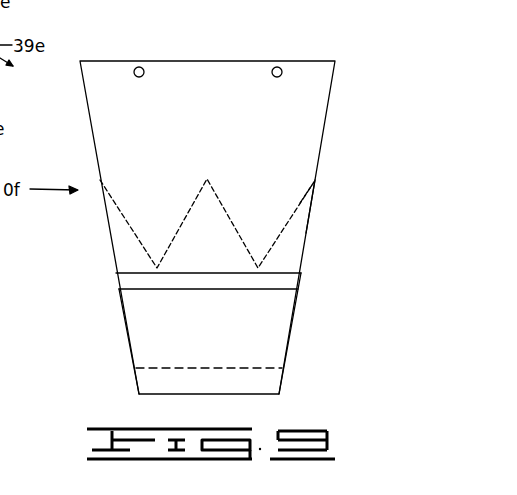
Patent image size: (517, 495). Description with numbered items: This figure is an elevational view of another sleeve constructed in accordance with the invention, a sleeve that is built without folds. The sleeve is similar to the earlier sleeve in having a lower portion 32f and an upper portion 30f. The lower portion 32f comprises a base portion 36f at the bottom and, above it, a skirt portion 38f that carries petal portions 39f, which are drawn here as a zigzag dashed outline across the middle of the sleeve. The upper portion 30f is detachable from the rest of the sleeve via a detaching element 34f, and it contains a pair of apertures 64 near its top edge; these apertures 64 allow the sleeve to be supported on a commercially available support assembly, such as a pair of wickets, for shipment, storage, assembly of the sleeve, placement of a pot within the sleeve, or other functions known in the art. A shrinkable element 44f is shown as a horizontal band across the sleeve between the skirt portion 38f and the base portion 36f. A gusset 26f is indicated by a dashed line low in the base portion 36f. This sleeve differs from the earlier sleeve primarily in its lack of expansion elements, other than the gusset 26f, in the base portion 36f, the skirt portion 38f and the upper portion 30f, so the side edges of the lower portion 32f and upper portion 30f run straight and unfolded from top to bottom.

The upper portion 30f is at (325, 122).
The apertures 64 is at (138, 67).
The petal portions 39f is at (196, 200).
The detaching element 34f is at (300, 203).
The skirt portion 38f is at (297, 233).
The shrinkable element 44f is at (123, 282).
The lower portion 32f is at (295, 307).
The base portion 36f is at (128, 337).
The gusset 26f is at (250, 367).